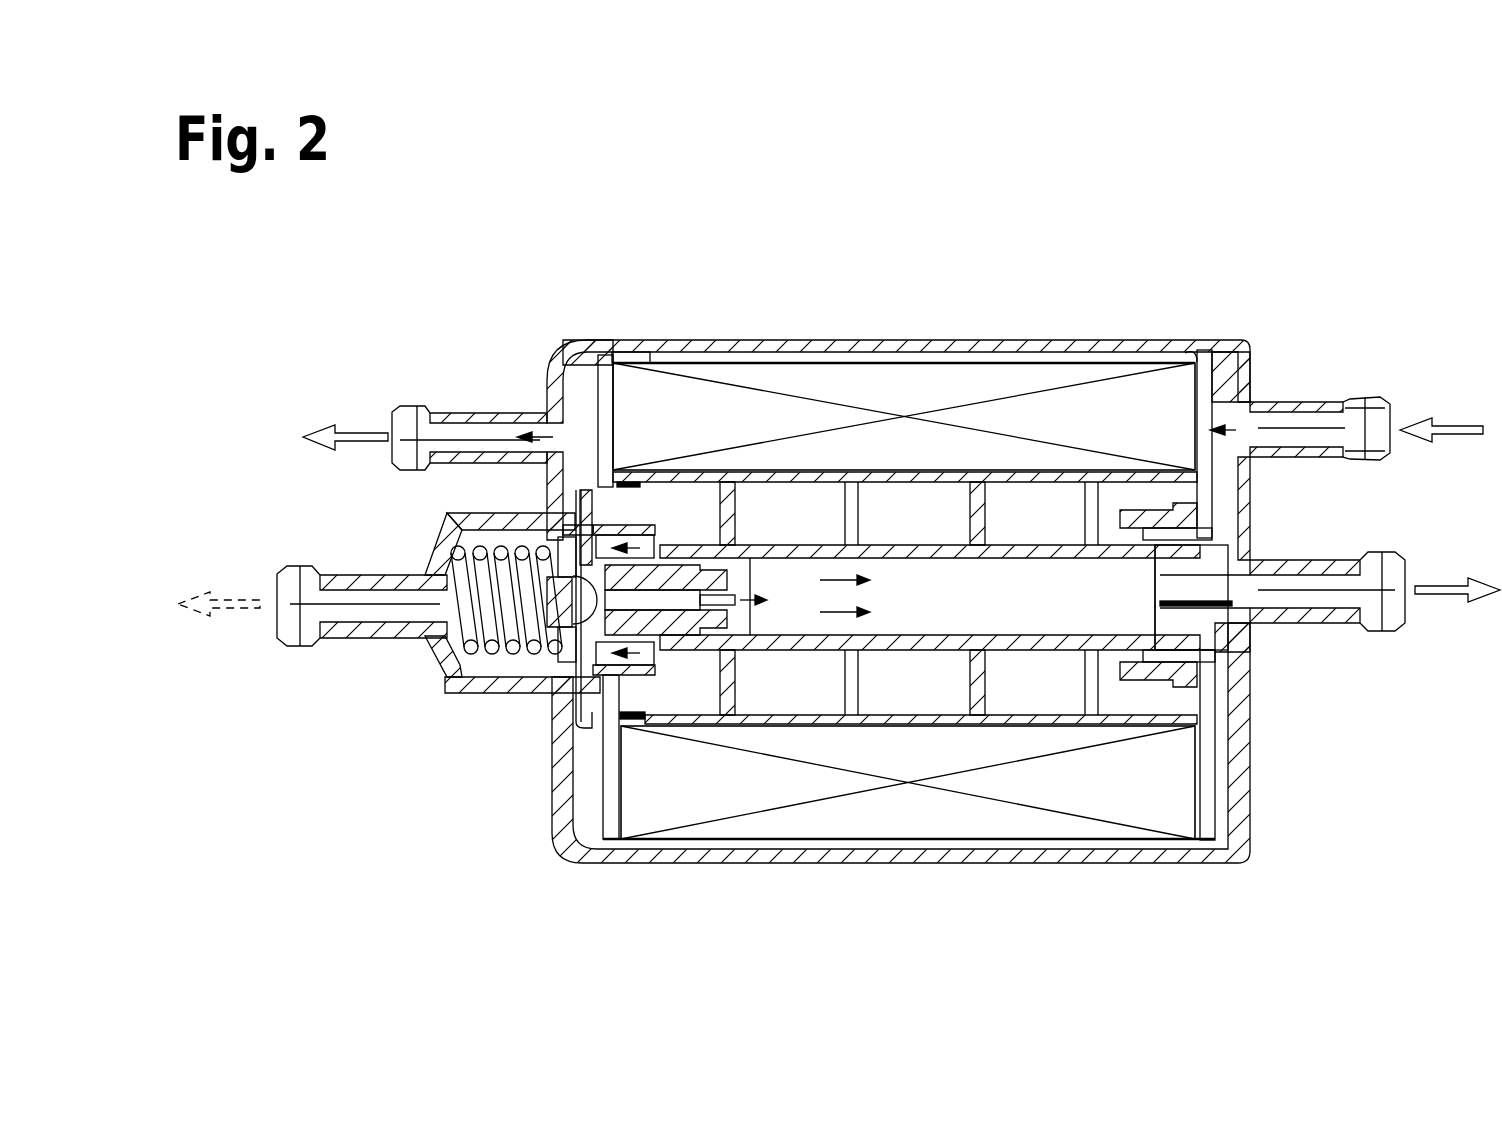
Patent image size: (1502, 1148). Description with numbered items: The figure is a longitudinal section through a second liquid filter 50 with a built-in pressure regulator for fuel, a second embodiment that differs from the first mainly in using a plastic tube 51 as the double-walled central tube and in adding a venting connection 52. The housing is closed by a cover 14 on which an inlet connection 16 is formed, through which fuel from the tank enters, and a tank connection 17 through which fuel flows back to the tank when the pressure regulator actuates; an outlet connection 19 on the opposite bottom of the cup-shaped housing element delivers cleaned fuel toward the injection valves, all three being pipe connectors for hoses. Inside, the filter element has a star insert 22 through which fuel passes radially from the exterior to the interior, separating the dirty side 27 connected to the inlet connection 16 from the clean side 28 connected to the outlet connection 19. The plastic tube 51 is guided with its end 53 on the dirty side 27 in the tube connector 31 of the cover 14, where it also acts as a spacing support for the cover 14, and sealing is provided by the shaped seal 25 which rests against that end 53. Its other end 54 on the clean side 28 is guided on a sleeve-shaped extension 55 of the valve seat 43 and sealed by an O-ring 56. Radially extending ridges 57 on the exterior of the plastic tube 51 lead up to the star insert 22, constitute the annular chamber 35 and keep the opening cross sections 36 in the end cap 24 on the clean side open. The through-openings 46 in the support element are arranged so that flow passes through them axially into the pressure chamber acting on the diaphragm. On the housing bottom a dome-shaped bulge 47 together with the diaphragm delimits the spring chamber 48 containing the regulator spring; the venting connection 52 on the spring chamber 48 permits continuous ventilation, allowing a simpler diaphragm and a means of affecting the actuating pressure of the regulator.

The cover 14 is at (1232, 803).
The inlet connection 16 is at (1338, 423).
The tank connection 17 is at (1340, 598).
The outlet connection 19 is at (402, 427).
The star insert 22 is at (800, 465).
The end cap 24 is at (618, 490).
The shaped seal 25 is at (1200, 514).
The dirty side 27 is at (1207, 415).
The clean side 28 is at (598, 802).
The tube connector 31 is at (1193, 552).
The annular chamber 35 is at (1027, 703).
The opening cross sections 36 is at (638, 492).
The valve seat 43 is at (580, 683).
The through-openings 46 is at (687, 545).
The bulge 47 is at (500, 688).
The spring chamber 48 is at (462, 535).
The second liquid filter 50 is at (1163, 316).
The plastic tube 51 is at (936, 507).
The venting connection 52 is at (298, 592).
The end 53 is at (1182, 622).
The other end 54 is at (680, 633).
The sleeve-shaped extension 55 is at (690, 632).
The O-ring 56 is at (873, 845).
The ridges 57 is at (858, 703).